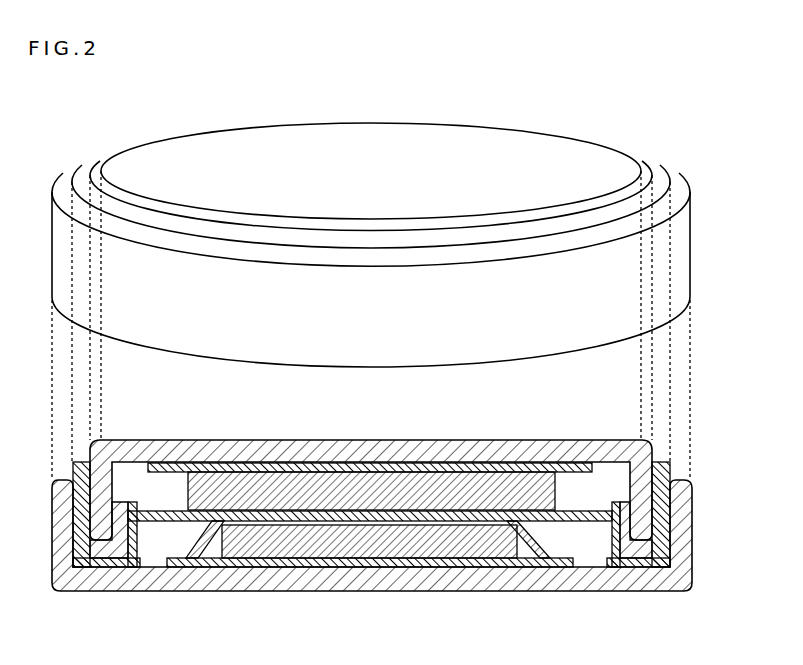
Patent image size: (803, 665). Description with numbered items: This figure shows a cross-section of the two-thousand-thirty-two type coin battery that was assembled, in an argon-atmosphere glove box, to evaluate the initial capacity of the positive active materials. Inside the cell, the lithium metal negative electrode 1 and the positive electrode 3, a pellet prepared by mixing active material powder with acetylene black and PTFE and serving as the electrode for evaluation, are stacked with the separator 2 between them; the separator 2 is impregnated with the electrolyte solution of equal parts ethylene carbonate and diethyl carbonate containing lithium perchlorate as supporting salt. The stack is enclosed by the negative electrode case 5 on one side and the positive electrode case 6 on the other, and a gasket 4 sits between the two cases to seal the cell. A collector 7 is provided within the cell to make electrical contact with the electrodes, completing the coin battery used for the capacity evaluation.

The lithium metal negative electrode 1 is at (267, 492).
The separator 2 is at (609, 562).
The positive electrode 3 is at (387, 540).
The gasket 4 is at (84, 462).
The negative electrode case 5 is at (432, 448).
The positive electrode case 6 is at (472, 580).
The collector 7 is at (168, 472).